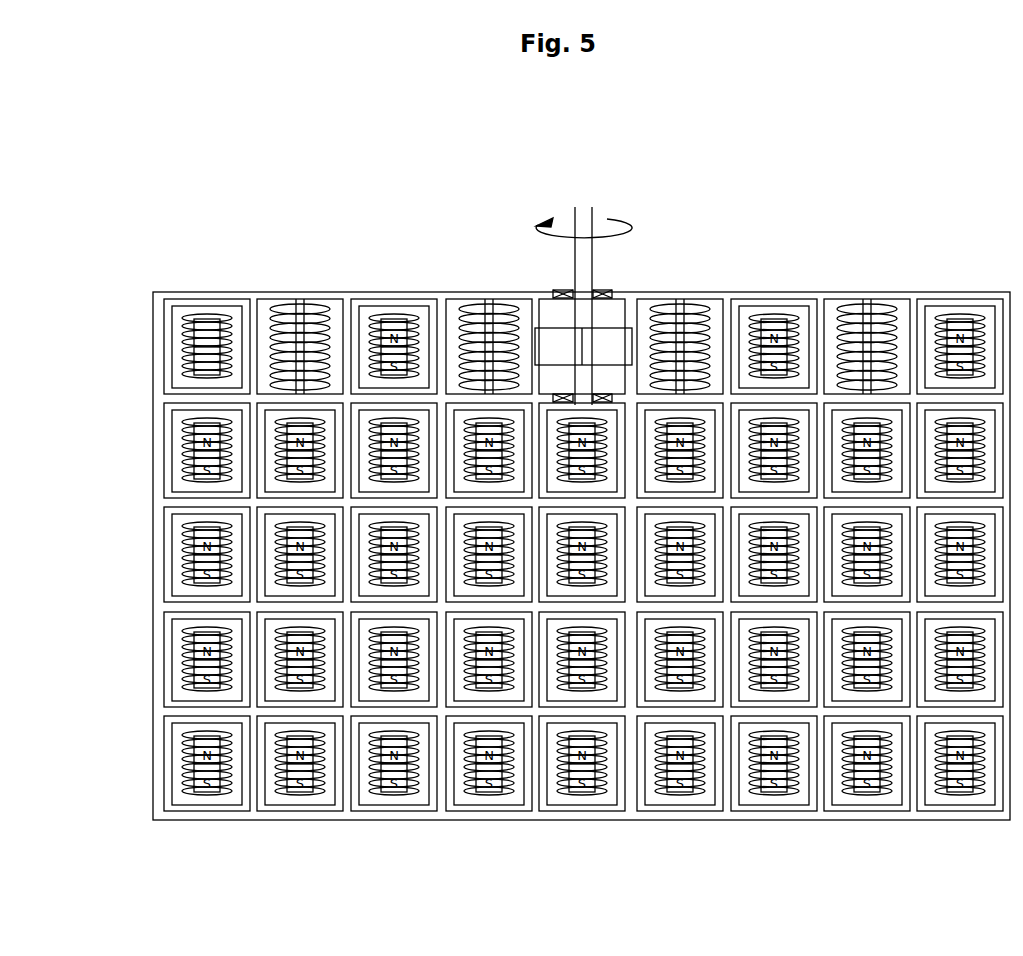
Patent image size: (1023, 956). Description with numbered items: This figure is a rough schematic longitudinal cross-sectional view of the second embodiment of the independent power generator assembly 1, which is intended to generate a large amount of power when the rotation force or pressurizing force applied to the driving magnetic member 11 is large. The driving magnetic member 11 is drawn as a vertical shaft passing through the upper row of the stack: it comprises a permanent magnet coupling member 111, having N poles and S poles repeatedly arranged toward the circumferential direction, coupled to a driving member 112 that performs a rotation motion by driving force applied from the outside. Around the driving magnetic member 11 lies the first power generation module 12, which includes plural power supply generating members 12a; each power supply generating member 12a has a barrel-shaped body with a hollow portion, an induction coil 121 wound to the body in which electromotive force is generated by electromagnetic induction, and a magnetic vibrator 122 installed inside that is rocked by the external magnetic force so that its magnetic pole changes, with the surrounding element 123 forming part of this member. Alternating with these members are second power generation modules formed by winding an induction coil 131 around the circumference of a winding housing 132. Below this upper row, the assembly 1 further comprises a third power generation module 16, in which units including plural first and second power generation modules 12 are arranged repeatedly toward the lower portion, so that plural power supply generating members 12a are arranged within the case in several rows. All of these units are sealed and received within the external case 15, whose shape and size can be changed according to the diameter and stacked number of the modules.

The independent power generator assembly 1 is at (161, 50).
The driving magnetic member 11 is at (730, 224).
The permanent magnet coupling member 111 is at (620, 327).
The driving member 112 is at (590, 262).
The first power generation module 12 is at (327, 170).
The power supply generating member 12a is at (120, 215).
The induction coil 121 is at (197, 319).
The magnetic vibrator 122 is at (216, 319).
The unit housing 123 is at (176, 306).
The induction coil 131 is at (465, 307).
The winding housing 132 is at (484, 300).
The external case 15 is at (928, 297).
The third power generation module 16 is at (150, 447).